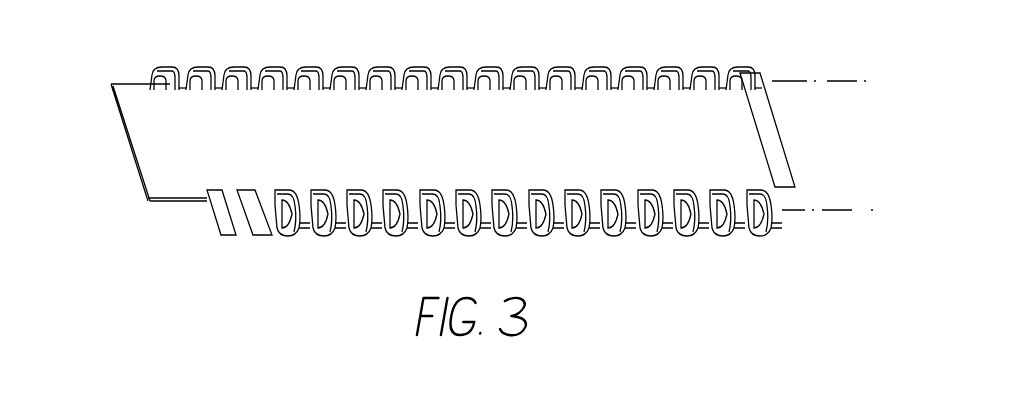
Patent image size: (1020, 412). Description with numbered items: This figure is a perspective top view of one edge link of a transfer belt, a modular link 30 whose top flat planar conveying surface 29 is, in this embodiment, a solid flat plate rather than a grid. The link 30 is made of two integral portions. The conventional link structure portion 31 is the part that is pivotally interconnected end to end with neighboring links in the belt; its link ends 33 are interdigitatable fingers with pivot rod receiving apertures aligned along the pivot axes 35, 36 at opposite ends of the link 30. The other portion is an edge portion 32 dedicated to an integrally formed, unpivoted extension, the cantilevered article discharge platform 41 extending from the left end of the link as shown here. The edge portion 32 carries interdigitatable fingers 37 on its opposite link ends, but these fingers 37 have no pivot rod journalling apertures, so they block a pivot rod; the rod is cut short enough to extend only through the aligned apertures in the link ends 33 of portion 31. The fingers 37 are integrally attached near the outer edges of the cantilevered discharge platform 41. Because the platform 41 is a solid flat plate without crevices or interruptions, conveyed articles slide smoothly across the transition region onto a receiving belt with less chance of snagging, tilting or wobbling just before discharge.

The top flat planar conveying surface 29 is at (733, 138).
The modular link 30 is at (441, 154).
The conventional link structure portion 31 is at (456, 45).
The edge portion 32 is at (277, 238).
The link ends 33 is at (370, 232).
The pivot axis 35 is at (833, 209).
The pivot axis 36 is at (828, 81).
The interdigitatable fingers 37 is at (178, 47).
The article discharge platform 41 is at (124, 155).